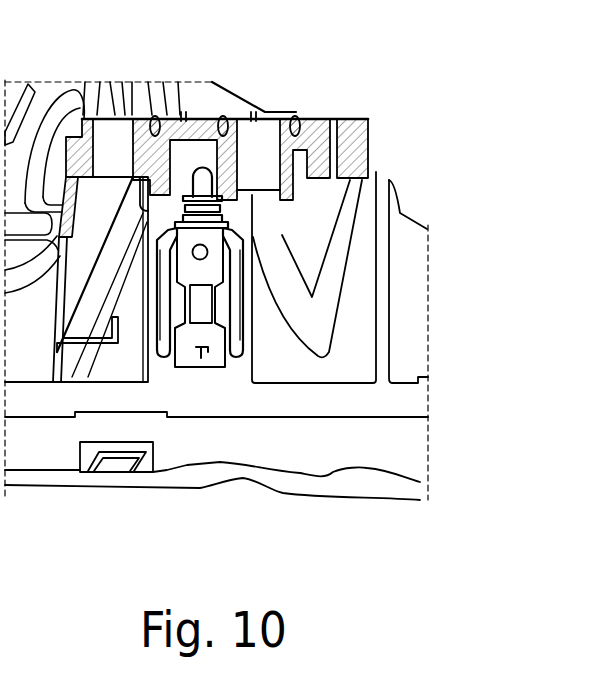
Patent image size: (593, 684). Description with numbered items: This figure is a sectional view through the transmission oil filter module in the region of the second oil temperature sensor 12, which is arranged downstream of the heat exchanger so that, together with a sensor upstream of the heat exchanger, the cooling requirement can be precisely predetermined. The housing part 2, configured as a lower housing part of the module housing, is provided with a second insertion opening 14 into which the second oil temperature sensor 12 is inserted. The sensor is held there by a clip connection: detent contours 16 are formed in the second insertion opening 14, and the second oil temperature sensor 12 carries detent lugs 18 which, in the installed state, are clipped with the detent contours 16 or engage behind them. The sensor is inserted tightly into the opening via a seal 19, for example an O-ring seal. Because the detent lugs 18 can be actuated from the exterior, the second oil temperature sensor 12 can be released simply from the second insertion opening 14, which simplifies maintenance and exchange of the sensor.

The housing part 2 is at (330, 440).
The second oil temperature sensor 12 is at (197, 350).
The second insertion opening 14 is at (222, 222).
The detent contours 16 is at (157, 310).
The detent lugs 18 is at (245, 305).
The seal 19 is at (206, 170).